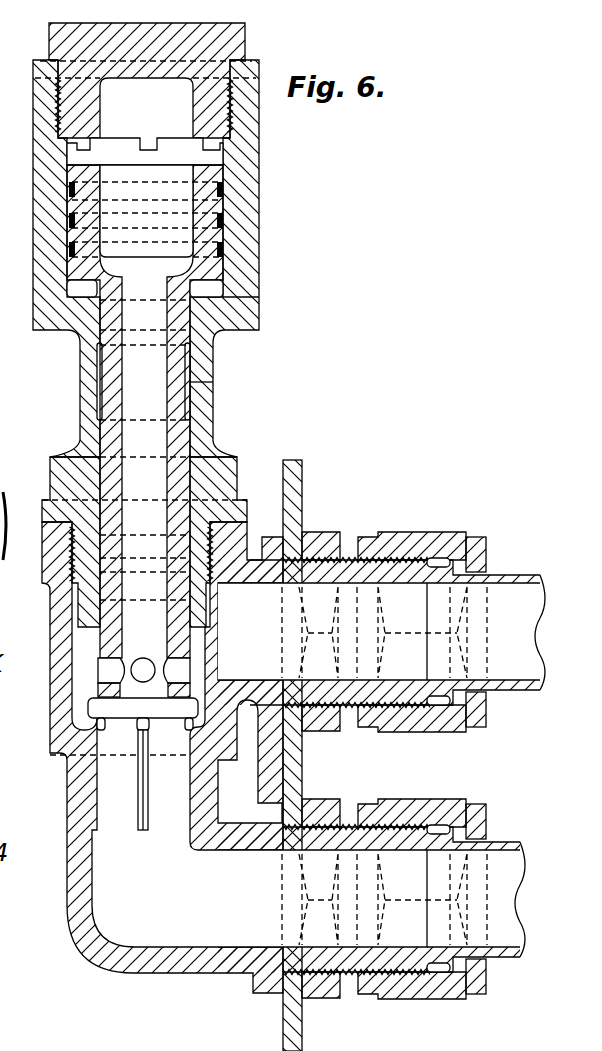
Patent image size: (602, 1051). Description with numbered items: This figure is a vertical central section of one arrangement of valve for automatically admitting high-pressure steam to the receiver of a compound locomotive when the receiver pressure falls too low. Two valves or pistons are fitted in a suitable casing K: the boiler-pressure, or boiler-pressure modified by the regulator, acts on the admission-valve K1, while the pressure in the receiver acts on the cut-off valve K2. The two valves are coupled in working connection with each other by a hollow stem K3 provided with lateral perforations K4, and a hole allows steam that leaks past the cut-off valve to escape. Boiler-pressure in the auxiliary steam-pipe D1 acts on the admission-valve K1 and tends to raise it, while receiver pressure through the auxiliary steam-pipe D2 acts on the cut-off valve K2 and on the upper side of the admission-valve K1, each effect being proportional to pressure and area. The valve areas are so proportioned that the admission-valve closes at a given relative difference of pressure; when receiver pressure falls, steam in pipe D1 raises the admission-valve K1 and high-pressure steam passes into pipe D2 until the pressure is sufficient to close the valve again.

The casing K is at (77, 335).
The admission-valve K1 is at (143, 762).
The cut-off valve K2 is at (100, 222).
The hollow stem K3 is at (145, 411).
The lateral perforations K4 is at (178, 675).
The auxiliary steam-pipe D1 is at (371, 899).
The auxiliary steam-pipe D2 is at (381, 632).